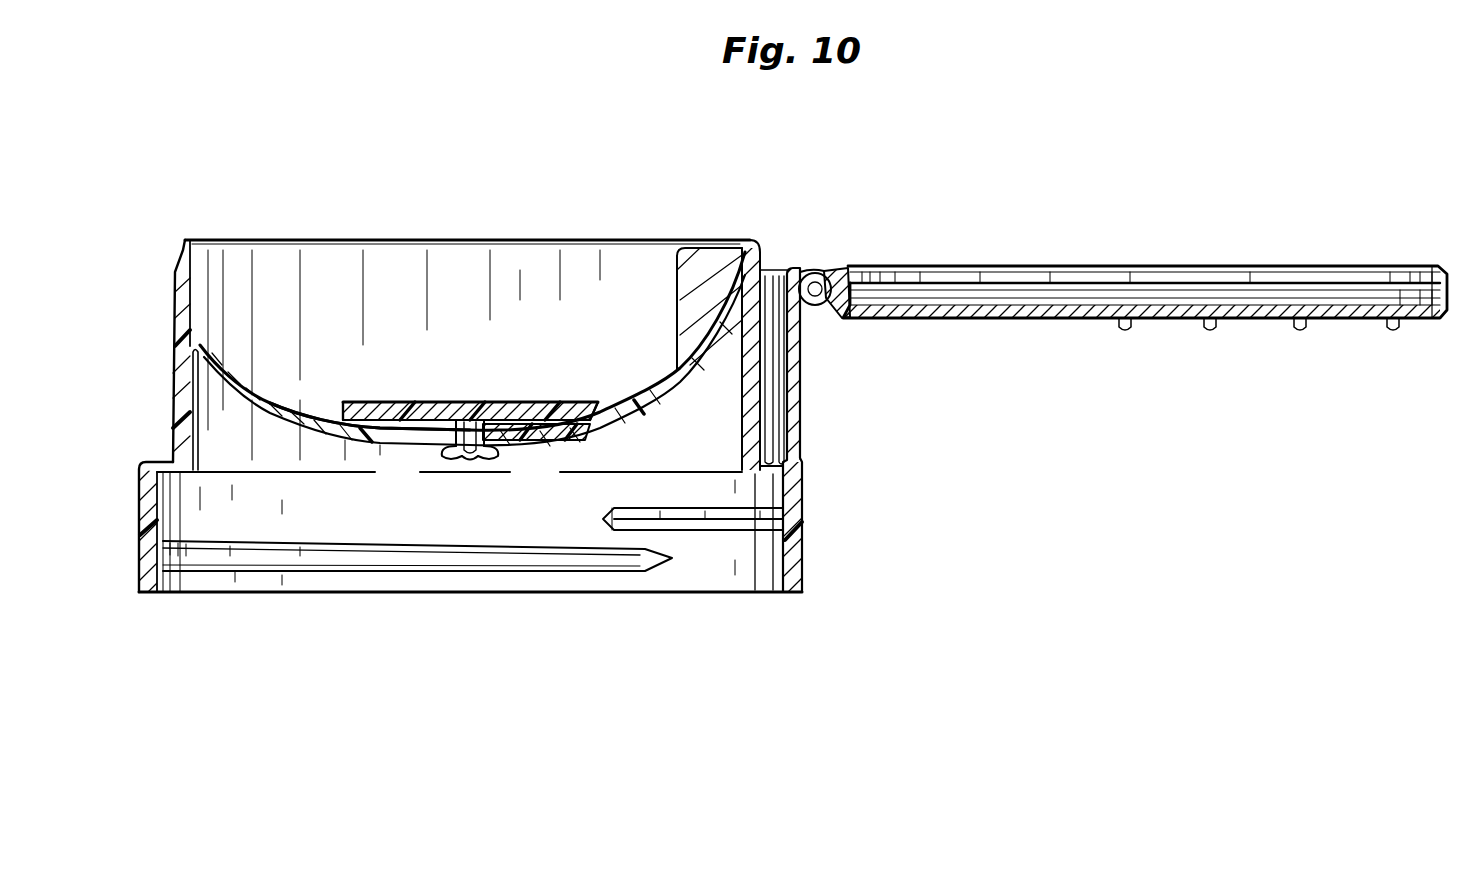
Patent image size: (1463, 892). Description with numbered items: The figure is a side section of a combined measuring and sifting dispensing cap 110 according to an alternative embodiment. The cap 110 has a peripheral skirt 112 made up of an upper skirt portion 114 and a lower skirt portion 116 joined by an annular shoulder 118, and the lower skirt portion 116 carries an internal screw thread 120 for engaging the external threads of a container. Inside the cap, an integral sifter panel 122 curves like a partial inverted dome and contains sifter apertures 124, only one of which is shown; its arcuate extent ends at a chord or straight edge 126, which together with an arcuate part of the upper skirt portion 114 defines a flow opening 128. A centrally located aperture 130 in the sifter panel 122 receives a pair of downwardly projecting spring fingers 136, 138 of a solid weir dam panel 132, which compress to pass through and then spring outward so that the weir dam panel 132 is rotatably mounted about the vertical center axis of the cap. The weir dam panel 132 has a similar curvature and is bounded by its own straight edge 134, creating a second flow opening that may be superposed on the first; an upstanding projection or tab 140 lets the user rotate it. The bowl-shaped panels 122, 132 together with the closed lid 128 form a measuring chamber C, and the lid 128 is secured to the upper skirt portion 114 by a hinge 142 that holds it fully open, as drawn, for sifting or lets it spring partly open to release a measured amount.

The measuring/dispensing cap 110 is at (912, 142).
The peripheral skirt 112 is at (815, 509).
The upper skirt portion 114 is at (172, 326).
The lower skirt portion 116 is at (142, 492).
The annular shoulder 118 is at (153, 458).
The internal screw thread 120 is at (598, 566).
The sifter panel 122 is at (307, 414).
The sifter apertures 124 is at (236, 373).
The straight edge 126 is at (590, 432).
The lid 128 is at (683, 382).
The centrally located aperture 130 is at (458, 404).
The weir dam panel 132 is at (548, 406).
The straight edge 134 is at (345, 402).
The spring finger 136 is at (445, 450).
The spring finger 138 is at (487, 450).
The upstanding projection or tab 140 is at (676, 292).
The hinge 142 is at (834, 258).
The measuring chamber C is at (460, 270).